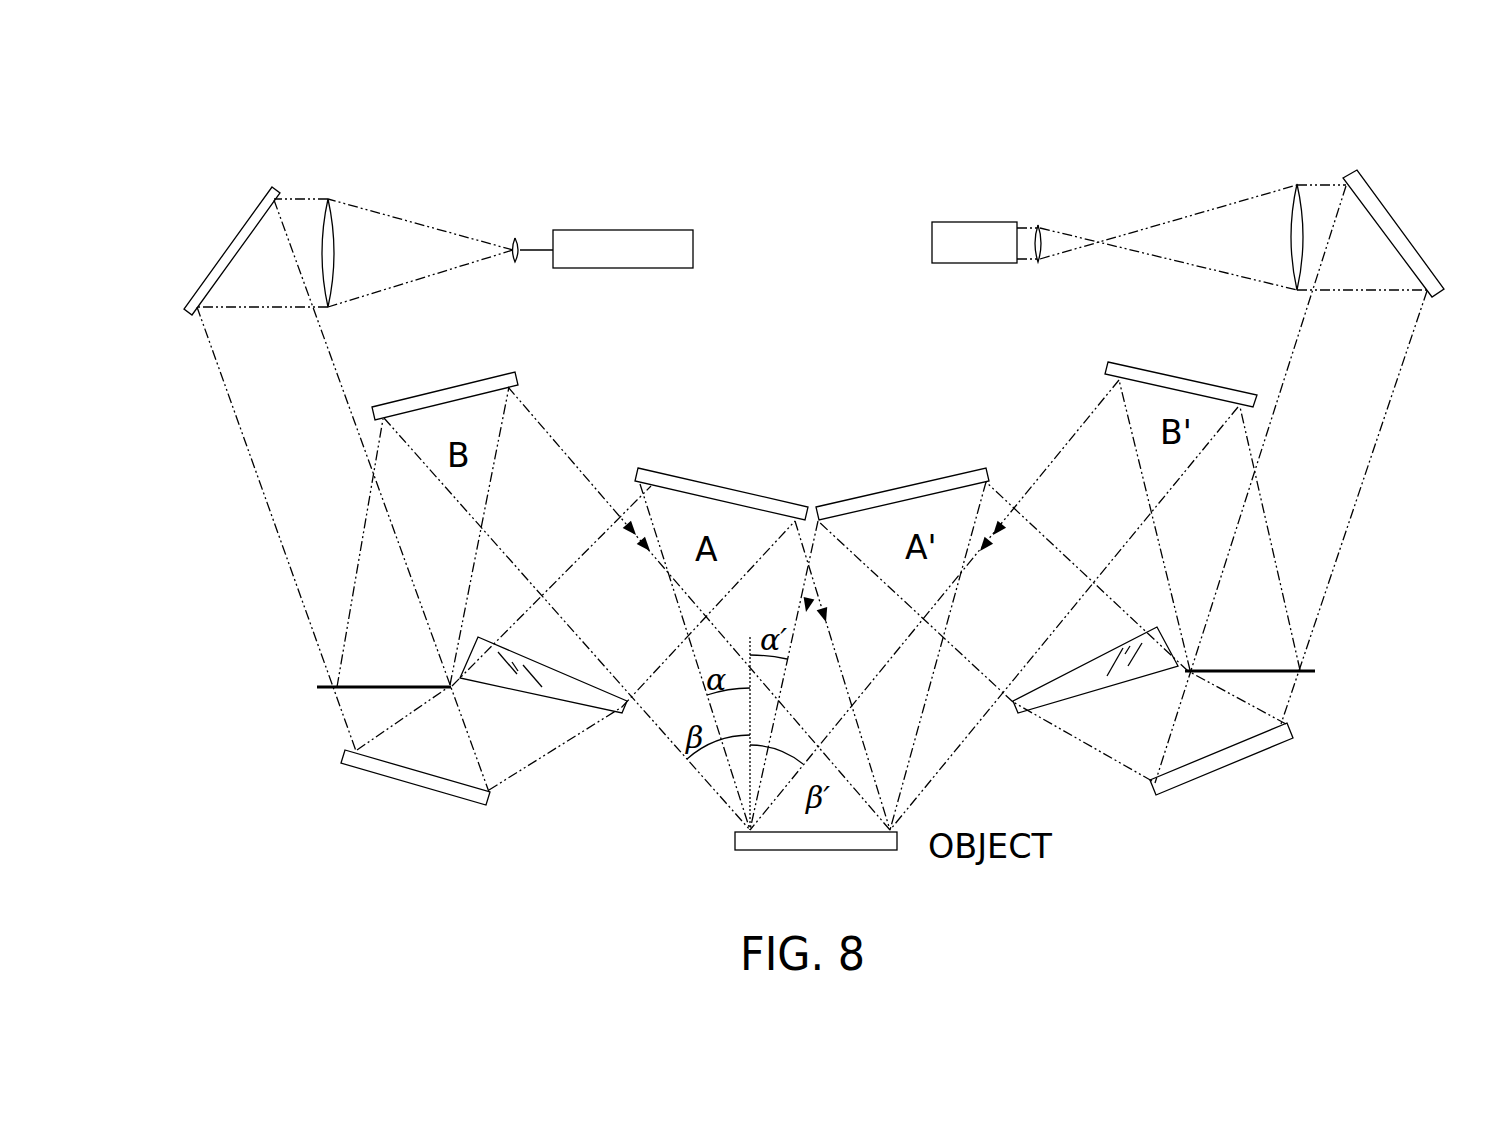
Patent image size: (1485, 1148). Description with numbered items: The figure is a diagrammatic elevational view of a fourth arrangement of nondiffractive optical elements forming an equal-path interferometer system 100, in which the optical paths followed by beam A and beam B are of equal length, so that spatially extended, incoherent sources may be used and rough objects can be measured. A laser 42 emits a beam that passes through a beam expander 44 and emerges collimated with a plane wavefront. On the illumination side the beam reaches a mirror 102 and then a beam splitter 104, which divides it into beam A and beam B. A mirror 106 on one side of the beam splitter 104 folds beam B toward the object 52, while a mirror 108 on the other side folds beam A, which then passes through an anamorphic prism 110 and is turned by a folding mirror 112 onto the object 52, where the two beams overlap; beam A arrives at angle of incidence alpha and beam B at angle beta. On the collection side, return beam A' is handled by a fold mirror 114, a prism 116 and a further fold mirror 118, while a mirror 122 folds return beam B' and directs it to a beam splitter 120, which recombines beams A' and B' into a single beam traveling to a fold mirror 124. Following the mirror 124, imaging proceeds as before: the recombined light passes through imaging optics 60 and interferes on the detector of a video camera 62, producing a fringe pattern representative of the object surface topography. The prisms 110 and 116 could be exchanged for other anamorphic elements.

The laser 42 is at (608, 230).
The beam expander 44 is at (337, 240).
The object 52 is at (745, 850).
The imaging optics 60 is at (1288, 237).
The video camera 62 is at (980, 222).
The system 100 is at (821, 140).
The mirror 102 is at (262, 198).
The beam splitter 104 is at (350, 686).
The mirror 106 is at (483, 378).
The mirror 108 is at (410, 788).
The prism 110 is at (537, 695).
The folding mirror 112 is at (733, 485).
The fold mirror 114 is at (920, 478).
The prism 116 is at (1110, 687).
The fold mirror 118 is at (1198, 780).
The beam splitter 120 is at (1268, 670).
The mirror 122 is at (1165, 371).
The fold mirror 124 is at (1380, 205).